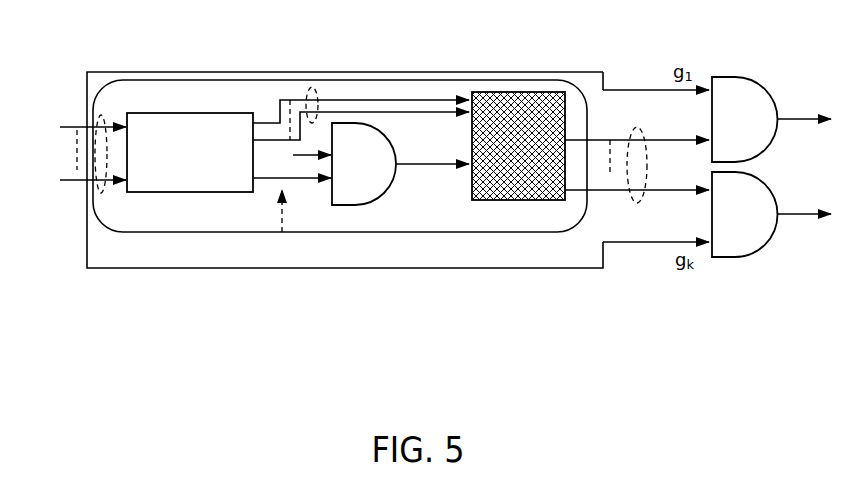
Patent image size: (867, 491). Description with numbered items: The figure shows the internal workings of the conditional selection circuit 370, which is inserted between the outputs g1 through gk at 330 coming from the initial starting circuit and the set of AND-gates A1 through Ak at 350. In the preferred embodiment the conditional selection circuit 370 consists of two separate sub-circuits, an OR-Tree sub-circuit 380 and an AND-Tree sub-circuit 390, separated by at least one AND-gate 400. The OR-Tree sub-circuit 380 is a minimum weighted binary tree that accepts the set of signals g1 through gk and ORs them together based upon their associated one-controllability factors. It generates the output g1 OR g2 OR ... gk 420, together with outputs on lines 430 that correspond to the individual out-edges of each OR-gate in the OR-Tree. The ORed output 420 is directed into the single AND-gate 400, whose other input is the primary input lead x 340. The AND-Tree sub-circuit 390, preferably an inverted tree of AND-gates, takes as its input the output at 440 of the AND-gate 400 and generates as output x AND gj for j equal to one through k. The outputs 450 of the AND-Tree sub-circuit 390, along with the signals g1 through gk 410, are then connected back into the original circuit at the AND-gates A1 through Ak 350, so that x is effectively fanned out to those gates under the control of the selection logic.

The output edges of gates g1 through gk 330 is at (50, 205).
The primary input lead x 340 is at (300, 160).
The set of AND-gates A1 through Ak 350 is at (735, 270).
The conditional selection circuit 370 is at (175, 236).
The OR-Tree sub-circuit 380 is at (163, 113).
The AND-Tree sub-circuit 390 is at (515, 92).
The AND-gate 400 is at (365, 123).
The signals g1 through gk 410 is at (100, 115).
The OR-tree output g1 OR g2 OR ... gk 420 is at (265, 183).
The OR-gate out-edge output lines 430 is at (312, 87).
The AND-gate output 440 is at (413, 163).
The AND-Tree sub-circuit outputs 450 is at (637, 127).